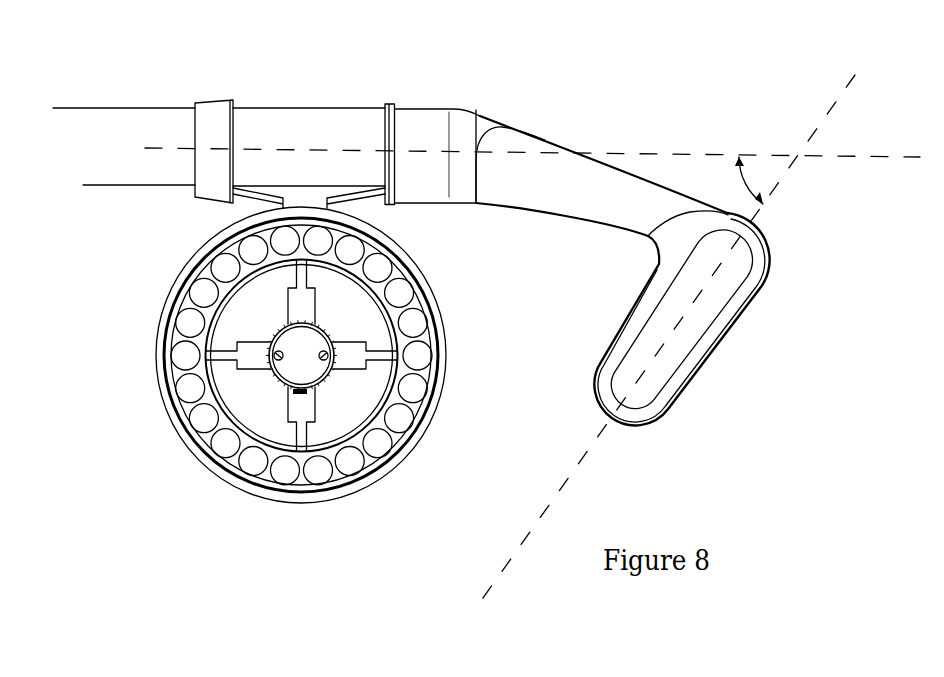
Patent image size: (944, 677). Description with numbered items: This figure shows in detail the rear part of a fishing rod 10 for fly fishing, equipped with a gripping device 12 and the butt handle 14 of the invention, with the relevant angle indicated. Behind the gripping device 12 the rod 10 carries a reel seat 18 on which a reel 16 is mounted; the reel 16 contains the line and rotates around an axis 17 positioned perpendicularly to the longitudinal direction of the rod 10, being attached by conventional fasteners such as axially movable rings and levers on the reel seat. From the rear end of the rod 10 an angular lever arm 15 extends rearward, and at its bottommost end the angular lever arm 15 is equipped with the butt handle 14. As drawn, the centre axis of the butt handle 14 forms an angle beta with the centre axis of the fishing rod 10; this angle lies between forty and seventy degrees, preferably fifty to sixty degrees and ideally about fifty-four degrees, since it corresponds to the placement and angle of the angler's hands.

The fishing rod 10 is at (125, 123).
The gripping device 12 is at (432, 122).
The butt handle 14 is at (685, 385).
The angular lever arm 15 is at (605, 217).
The reel 16 is at (390, 468).
The axis 17 is at (297, 358).
The reel seat 18 is at (264, 180).